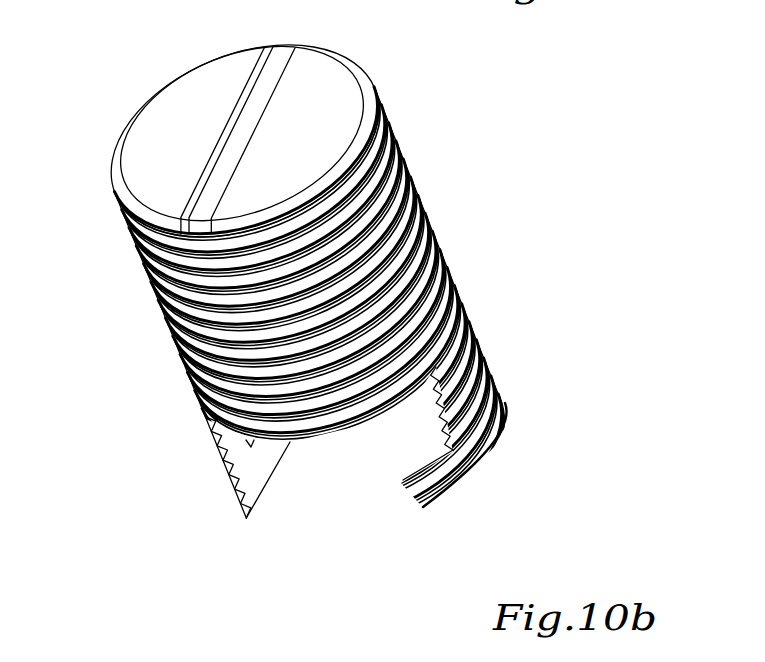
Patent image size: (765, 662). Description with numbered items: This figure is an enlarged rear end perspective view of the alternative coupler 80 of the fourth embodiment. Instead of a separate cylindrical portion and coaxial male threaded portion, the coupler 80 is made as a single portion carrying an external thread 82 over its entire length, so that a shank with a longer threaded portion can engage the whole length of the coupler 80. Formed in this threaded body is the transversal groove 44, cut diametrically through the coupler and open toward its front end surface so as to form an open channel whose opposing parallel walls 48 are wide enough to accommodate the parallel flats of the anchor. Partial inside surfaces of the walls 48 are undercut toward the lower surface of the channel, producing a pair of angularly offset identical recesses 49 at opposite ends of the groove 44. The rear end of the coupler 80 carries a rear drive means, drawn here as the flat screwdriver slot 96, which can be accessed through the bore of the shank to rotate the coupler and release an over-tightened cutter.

The coupler 80 is at (118, 133).
The external thread 82 is at (417, 203).
The tool slot 96 is at (285, 50).
The walls 48 is at (268, 458).
The recesses 49 is at (437, 437).
The transversal groove 44 is at (358, 472).